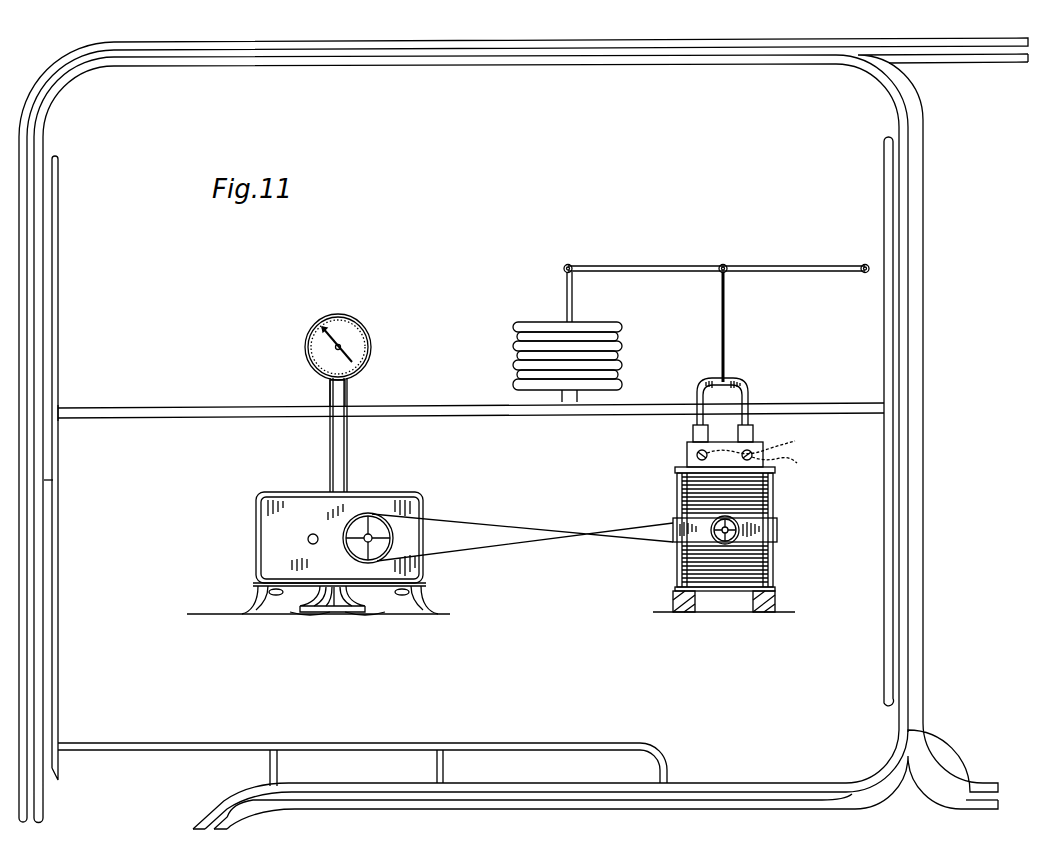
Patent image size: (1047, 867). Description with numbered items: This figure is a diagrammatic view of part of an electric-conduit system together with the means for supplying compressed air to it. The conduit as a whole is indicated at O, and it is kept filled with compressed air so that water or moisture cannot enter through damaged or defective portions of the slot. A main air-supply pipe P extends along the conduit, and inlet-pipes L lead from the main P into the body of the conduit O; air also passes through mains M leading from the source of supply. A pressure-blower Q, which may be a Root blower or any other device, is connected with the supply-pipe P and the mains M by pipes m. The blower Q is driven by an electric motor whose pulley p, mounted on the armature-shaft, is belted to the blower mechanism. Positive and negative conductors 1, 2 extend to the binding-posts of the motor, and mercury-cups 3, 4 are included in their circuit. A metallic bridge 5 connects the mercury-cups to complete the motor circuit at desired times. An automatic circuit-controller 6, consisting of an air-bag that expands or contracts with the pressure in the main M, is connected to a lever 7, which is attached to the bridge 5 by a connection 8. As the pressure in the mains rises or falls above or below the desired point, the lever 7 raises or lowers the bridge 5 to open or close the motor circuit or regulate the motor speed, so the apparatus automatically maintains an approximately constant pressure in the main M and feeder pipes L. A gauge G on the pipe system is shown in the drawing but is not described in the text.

The conduit O is at (441, 66).
The inlet-pipes L is at (55, 158).
The main air-supply pipe P is at (432, 404).
The pipes m is at (348, 455).
The pressure gauge G is at (338, 360).
The pressure-blower Q is at (430, 542).
The lever 7 is at (667, 264).
The connection 8 is at (725, 341).
The automatic circuit-controller 6 is at (622, 348).
The metallic bridge 5 is at (752, 386).
The mercury-cup 3 is at (693, 435).
The mercury-cup 4 is at (753, 436).
The positive conductor 1 is at (750, 445).
The negative conductor 2 is at (781, 460).
The mains M is at (724, 527).
The pulley p is at (737, 530).